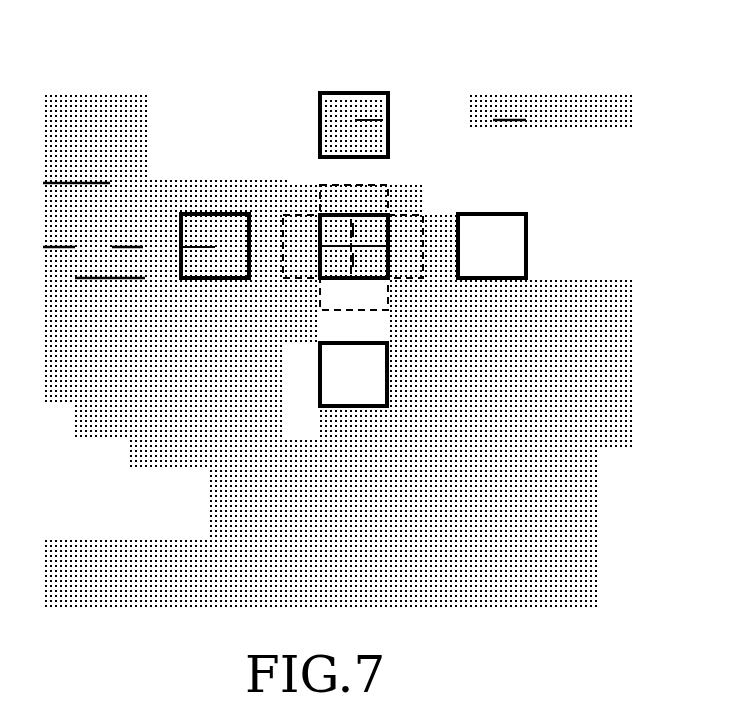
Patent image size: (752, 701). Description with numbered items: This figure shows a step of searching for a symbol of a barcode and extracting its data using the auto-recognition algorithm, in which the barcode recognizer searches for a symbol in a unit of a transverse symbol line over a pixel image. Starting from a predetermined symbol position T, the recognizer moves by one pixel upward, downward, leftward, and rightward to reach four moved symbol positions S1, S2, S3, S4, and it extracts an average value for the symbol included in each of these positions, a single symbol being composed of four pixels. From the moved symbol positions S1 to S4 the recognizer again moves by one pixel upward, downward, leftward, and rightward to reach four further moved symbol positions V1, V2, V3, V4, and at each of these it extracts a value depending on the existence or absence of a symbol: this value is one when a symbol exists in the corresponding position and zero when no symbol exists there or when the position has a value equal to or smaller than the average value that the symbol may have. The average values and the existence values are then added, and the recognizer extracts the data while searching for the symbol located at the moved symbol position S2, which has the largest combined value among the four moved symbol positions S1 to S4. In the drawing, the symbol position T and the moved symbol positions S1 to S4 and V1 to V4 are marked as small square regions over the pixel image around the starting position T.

The moved symbol position V1 is at (352, 93).
The moved symbol position V2 is at (388, 373).
The moved symbol position V3 is at (210, 213).
The moved symbol position V4 is at (527, 237).
The moved symbol position S1 is at (390, 215).
The moved symbol position S2 is at (390, 300).
The moved symbol position S3 is at (287, 215).
The moved symbol position S4 is at (421, 230).
The predetermined symbol position T is at (399, 213).